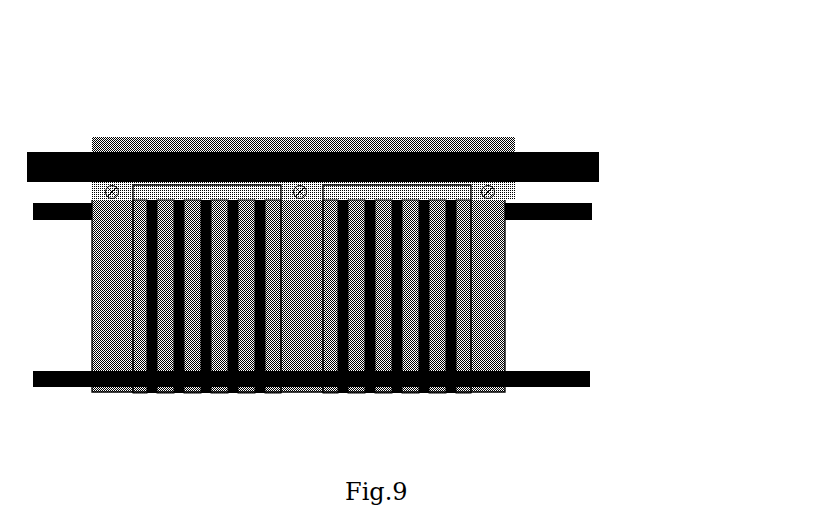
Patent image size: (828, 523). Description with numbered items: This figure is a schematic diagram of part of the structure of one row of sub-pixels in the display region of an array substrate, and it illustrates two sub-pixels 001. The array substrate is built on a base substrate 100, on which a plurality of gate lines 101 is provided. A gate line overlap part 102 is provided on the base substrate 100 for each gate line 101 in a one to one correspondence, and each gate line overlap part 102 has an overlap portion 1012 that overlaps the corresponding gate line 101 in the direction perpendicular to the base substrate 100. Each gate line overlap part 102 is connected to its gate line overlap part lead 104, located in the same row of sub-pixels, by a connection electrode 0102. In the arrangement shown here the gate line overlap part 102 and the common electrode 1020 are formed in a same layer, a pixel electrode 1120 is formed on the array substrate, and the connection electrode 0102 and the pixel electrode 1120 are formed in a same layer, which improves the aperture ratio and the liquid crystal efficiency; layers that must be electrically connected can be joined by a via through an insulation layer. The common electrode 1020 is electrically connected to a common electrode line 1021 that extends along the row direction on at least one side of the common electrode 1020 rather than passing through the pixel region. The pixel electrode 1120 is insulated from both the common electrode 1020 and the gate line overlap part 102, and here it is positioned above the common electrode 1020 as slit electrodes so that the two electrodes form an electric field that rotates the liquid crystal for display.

The base substrate 100 is at (127, 63).
The gate line 101 is at (577, 153).
The connection electrode 0102 is at (335, 158).
The overlap portion 1012 is at (215, 148).
The pixel electrode 1120 is at (376, 188).
The gate line overlap part 102 is at (319, 123).
The gate line overlap part lead 104 is at (578, 203).
The common electrode 1020 is at (503, 272).
The common electrode line 1021 is at (558, 371).
The sub-pixel 001 is at (302, 309).